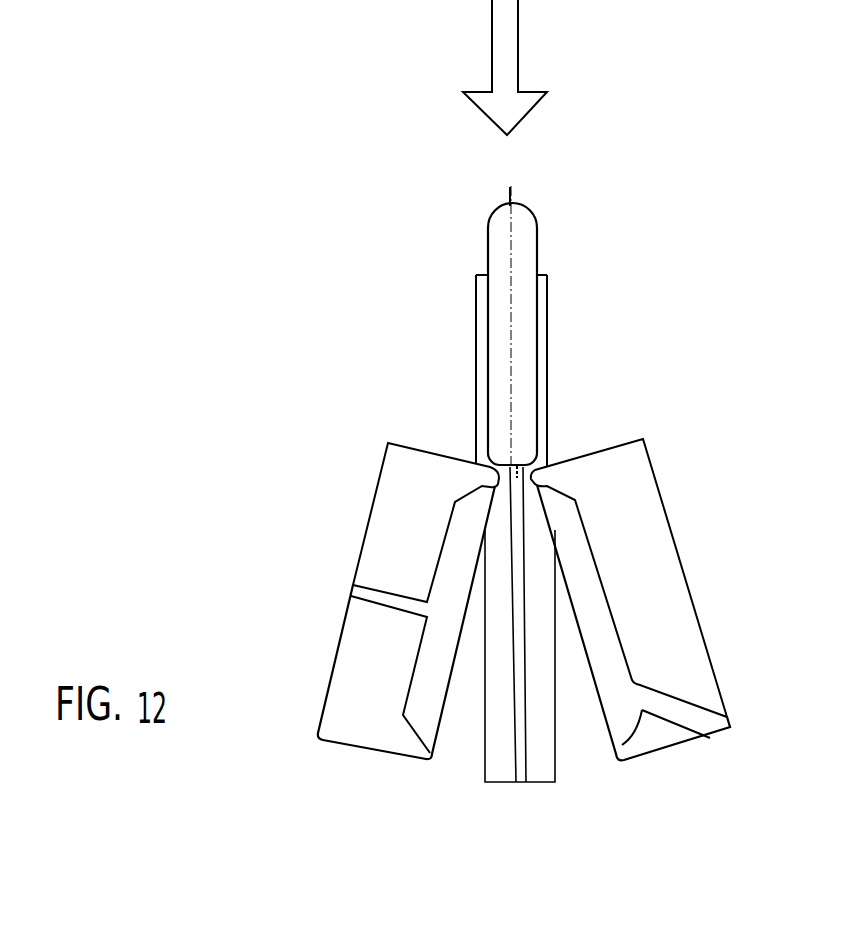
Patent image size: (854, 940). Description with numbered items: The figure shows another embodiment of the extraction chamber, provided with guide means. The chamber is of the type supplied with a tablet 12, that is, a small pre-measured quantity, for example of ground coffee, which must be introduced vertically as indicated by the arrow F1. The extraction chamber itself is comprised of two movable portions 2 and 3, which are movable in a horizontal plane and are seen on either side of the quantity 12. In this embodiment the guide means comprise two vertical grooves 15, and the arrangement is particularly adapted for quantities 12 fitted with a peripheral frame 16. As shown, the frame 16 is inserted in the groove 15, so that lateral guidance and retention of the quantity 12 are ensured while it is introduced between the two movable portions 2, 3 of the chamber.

The arrow F1 is at (502, 33).
The movable portion 2 is at (632, 578).
The movable portion 3 is at (412, 529).
The tablet 12 is at (517, 239).
The vertical groove 15 is at (518, 735).
The peripheral frame 16 is at (511, 194).